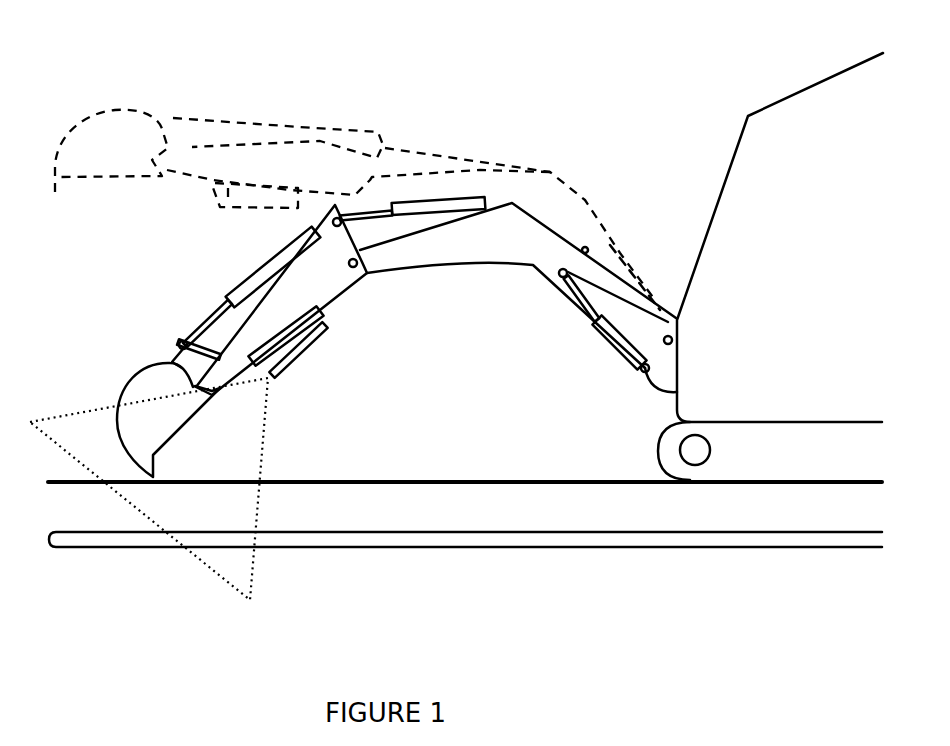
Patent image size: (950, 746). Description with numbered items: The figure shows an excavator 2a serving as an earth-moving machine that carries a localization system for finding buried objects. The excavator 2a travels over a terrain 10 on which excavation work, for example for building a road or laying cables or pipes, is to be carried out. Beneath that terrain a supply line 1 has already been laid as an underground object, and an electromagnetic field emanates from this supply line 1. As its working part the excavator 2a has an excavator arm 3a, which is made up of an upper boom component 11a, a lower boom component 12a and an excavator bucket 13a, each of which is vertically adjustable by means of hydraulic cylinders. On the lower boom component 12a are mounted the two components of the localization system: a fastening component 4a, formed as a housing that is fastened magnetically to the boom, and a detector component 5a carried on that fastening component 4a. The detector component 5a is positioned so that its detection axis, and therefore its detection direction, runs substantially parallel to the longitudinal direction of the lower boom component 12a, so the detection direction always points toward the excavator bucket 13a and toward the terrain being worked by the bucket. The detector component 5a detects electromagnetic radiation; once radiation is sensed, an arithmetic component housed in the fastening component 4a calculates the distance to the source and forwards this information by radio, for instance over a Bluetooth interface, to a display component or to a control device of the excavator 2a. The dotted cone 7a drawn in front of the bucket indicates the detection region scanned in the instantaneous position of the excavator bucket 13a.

The supply line 1 is at (418, 555).
The excavator 2a is at (648, 113).
The excavator arm 3a is at (437, 299).
The fastening component 4a is at (325, 328).
The detector component 5a is at (297, 353).
The working range 7a is at (215, 577).
The terrain 10 is at (571, 473).
The upper boom component 11a is at (487, 222).
The lower boom component 12a is at (300, 288).
The excavator bucket 13a is at (148, 383).